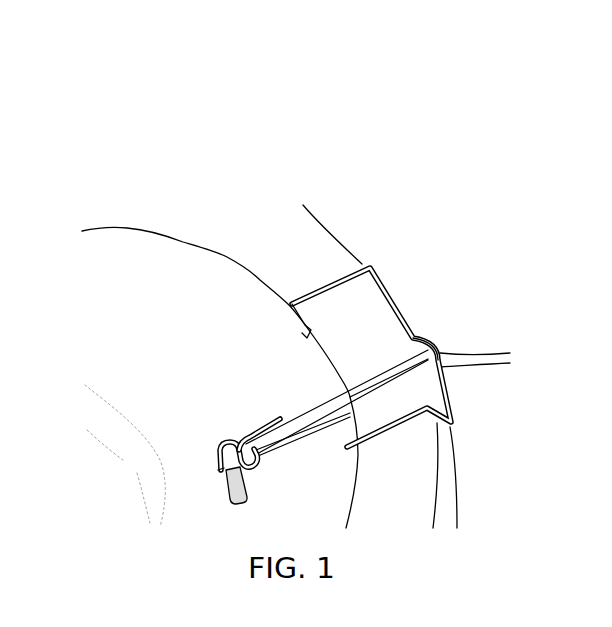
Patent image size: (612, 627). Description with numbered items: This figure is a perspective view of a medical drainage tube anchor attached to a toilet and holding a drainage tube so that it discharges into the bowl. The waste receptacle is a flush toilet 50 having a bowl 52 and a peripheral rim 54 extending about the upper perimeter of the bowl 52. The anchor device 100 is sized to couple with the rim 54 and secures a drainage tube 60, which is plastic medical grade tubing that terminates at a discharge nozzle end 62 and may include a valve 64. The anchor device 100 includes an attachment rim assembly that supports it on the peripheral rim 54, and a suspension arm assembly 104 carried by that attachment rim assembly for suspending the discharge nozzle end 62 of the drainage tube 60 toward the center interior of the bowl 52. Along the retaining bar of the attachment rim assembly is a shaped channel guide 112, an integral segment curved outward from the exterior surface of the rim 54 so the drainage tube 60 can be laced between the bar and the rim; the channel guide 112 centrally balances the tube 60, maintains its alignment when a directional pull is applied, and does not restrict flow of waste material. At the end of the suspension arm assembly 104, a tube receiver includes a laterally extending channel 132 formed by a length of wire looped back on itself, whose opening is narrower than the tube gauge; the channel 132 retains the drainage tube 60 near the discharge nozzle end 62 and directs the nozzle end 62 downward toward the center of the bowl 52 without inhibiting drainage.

The flush toilet 50 is at (266, 148).
The bowl 52 is at (128, 278).
The peripheral rim 54 is at (325, 222).
The drainage tube 60 is at (482, 343).
The discharge nozzle end 62 is at (210, 456).
The valve 64 is at (226, 487).
The anchor device 100 is at (415, 268).
The suspension arm assembly 104 is at (268, 406).
The shaped channel guide 112 is at (438, 328).
The laterally extending channel 132 is at (232, 436).